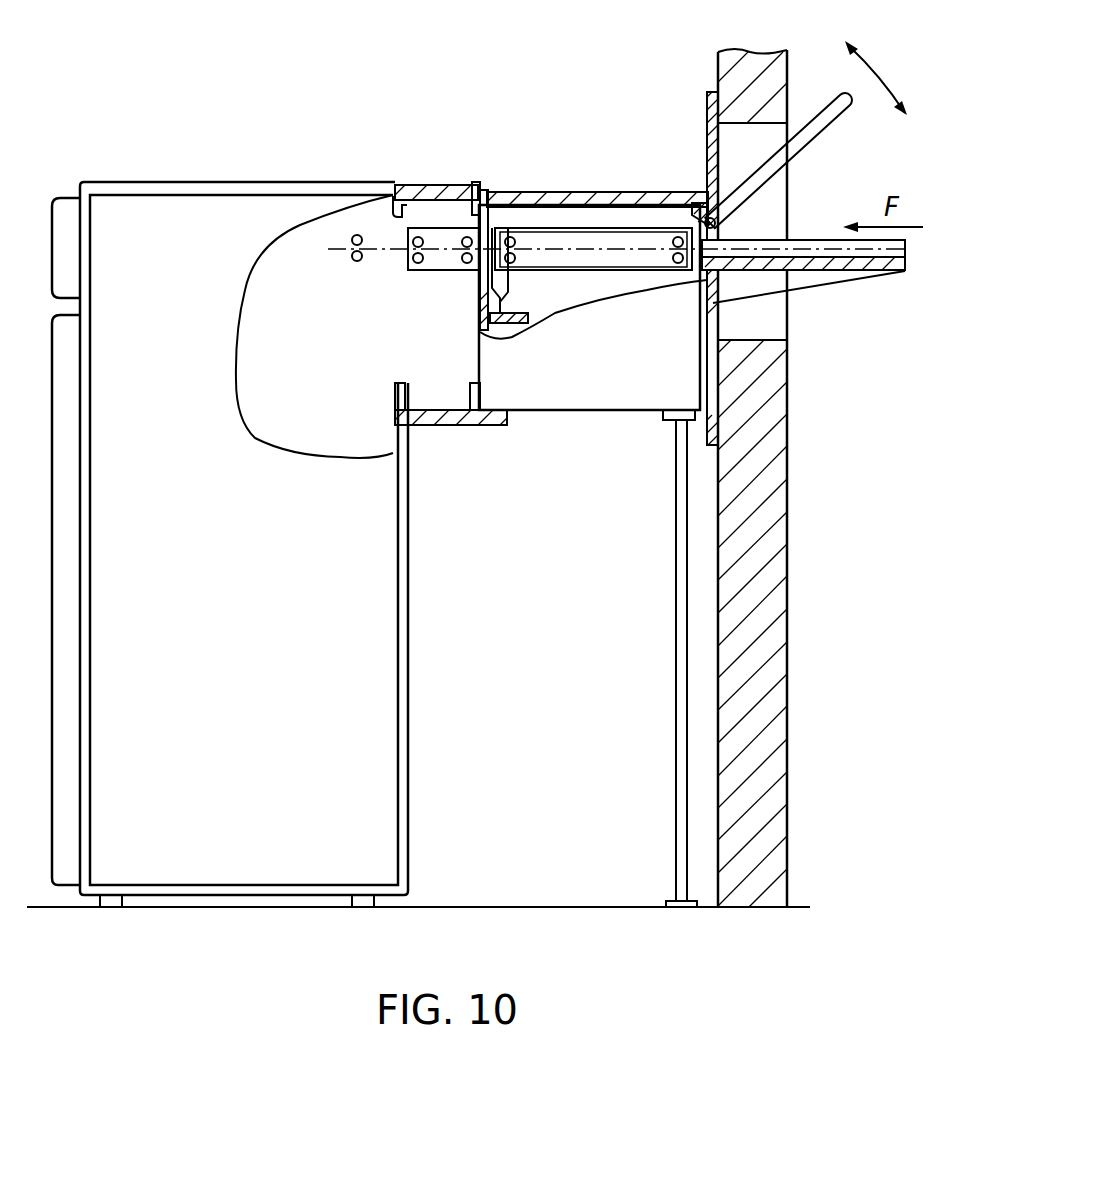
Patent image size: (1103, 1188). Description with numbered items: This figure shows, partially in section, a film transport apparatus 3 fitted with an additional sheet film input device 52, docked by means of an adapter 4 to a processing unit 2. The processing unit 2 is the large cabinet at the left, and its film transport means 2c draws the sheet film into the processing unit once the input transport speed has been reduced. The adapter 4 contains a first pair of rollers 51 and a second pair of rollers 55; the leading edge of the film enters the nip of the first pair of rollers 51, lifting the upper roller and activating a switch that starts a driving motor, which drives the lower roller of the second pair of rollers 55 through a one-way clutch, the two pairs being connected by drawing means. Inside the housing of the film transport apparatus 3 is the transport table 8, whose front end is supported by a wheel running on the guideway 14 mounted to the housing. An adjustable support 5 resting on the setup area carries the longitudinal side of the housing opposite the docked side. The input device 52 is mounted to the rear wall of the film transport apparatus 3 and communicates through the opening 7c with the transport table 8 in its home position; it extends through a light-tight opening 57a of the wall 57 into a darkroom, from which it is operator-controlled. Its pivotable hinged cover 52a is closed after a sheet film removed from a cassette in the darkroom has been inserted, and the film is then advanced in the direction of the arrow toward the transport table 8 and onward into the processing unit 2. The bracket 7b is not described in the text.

The processing unit 2 is at (182, 188).
The film transport means 2c is at (352, 236).
The film transport apparatus 3 is at (578, 178).
The adapter 4 is at (427, 182).
The adjustable support 5 is at (678, 850).
The bracket 7b is at (480, 290).
The opening 7c is at (692, 210).
The transport table 8 is at (595, 222).
The guideway 14 is at (525, 325).
The first pair of rollers 51 is at (462, 212).
The input device 52 is at (832, 247).
The hinged cover 52a is at (833, 112).
The second pair of rollers 55 is at (403, 240).
The wall 57 is at (768, 736).
The light-tight opening 57a is at (770, 340).